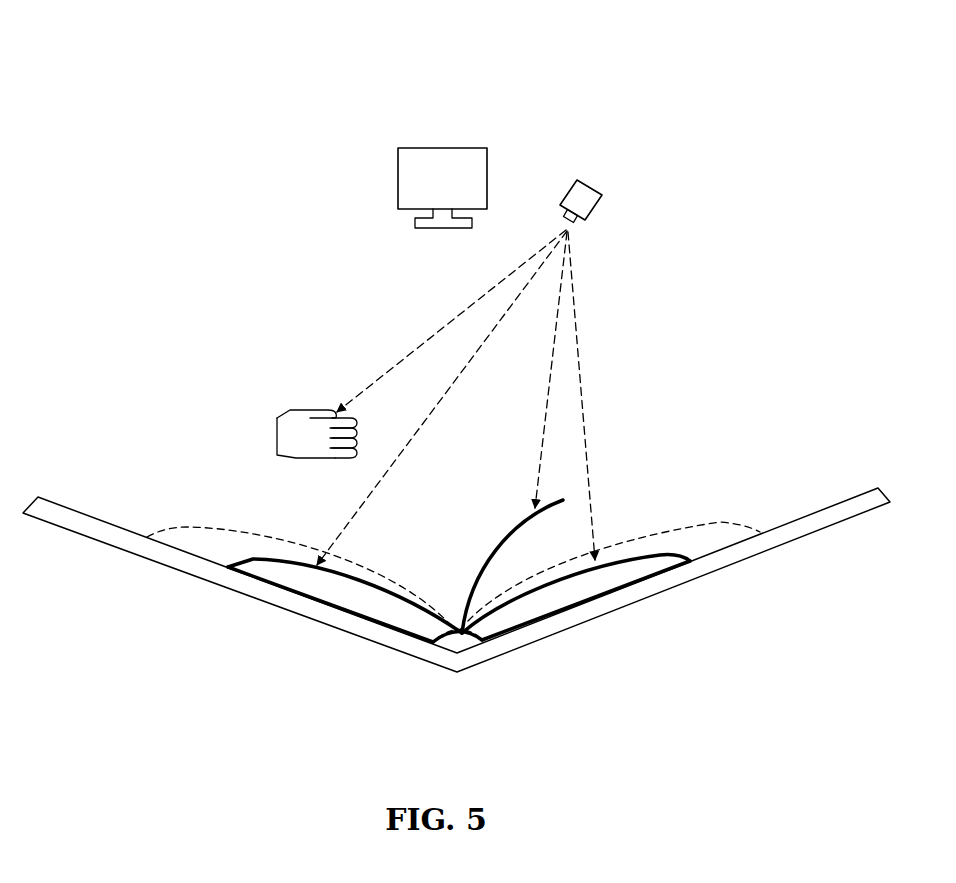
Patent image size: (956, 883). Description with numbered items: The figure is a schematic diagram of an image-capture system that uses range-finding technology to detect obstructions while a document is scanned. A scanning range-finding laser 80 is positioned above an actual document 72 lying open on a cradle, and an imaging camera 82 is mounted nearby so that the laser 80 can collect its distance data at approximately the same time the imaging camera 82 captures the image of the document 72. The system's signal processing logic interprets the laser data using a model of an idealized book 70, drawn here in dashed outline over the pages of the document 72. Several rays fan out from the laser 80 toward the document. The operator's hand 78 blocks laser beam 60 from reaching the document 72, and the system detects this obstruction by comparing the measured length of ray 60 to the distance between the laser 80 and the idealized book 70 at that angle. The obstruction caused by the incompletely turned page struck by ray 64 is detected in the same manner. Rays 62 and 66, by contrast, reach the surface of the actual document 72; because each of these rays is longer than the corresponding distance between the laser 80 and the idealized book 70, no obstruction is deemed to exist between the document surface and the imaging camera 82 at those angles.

The laser beam 60 is at (451, 321).
The ray 62 is at (442, 398).
The ray 64 is at (551, 370).
The ray 66 is at (581, 396).
The idealized book 70 is at (718, 522).
The actual document 72 is at (650, 553).
The operator's hand 78 is at (300, 408).
The range-finding laser 80 is at (600, 190).
The imaging camera 82 is at (440, 148).